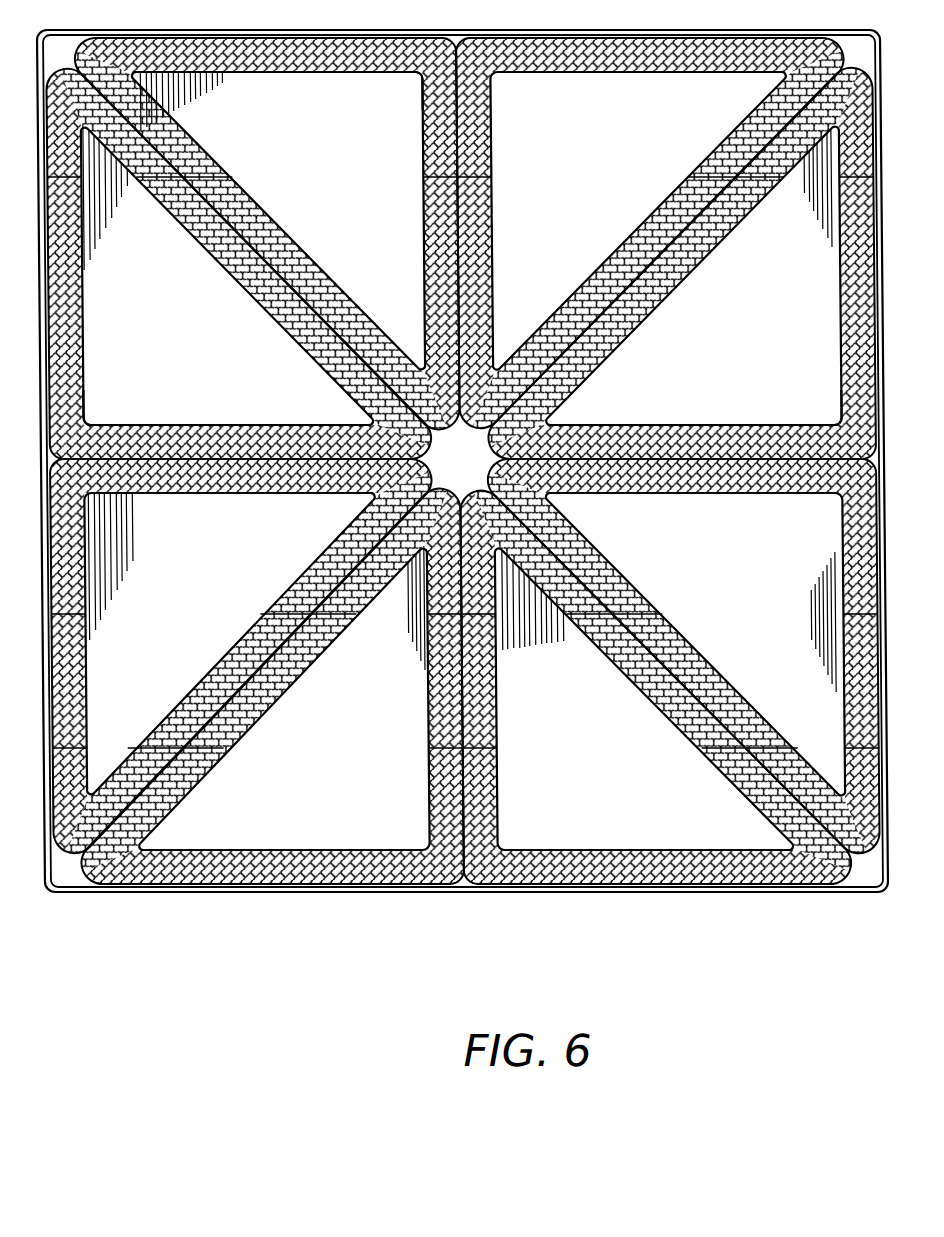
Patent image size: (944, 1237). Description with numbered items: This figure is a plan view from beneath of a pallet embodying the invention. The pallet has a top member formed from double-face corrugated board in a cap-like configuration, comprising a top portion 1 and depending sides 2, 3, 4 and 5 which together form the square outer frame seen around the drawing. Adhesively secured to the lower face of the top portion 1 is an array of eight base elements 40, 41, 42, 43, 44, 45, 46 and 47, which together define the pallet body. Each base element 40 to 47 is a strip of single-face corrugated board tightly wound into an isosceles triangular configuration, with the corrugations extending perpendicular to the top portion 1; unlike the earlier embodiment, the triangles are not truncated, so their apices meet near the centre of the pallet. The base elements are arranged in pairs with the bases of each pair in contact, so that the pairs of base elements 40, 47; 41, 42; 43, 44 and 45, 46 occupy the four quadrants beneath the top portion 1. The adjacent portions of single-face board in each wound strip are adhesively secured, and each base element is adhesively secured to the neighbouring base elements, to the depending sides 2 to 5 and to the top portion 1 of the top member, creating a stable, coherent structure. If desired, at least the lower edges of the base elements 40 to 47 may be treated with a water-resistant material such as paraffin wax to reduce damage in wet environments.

The top portion 1 is at (463, 495).
The depending side 2 is at (421, 90).
The depending side 3 is at (836, 416).
The depending side 4 is at (458, 890).
The depending side 5 is at (88, 418).
The base element 40 is at (301, 74).
The base element 41 is at (654, 74).
The base element 42 is at (733, 425).
The base element 43 is at (622, 572).
The base element 44 is at (581, 853).
The base element 45 is at (251, 853).
The base element 46 is at (305, 570).
The base element 47 is at (192, 423).